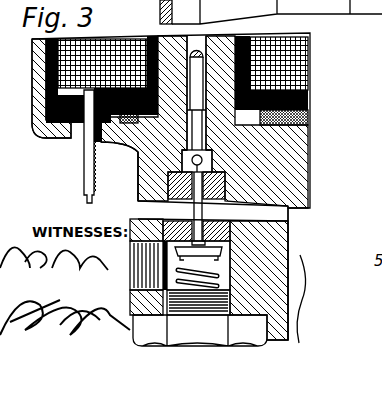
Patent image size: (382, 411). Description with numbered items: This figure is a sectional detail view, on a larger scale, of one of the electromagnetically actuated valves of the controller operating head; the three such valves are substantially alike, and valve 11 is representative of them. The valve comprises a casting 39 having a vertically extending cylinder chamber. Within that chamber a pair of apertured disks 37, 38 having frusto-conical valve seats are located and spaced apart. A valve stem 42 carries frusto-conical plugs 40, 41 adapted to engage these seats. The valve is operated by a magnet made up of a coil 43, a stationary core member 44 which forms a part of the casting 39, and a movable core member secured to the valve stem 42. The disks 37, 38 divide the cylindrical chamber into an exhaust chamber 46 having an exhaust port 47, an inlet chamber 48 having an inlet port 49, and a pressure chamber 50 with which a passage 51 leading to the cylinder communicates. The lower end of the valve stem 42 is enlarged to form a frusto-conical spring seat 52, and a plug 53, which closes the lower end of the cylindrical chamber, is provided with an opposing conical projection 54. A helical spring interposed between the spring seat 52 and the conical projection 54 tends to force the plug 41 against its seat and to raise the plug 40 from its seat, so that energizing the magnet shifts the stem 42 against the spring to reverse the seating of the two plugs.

The electromagnetically actuated valve 11 is at (293, 284).
The apertured disk 37 is at (140, 188).
The apertured disk 38 is at (157, 218).
The casting 39 is at (310, 157).
The frusto-conical plug 40 is at (212, 160).
The frusto-conical plug 41 is at (208, 209).
The valve stem 42 is at (185, 113).
The coil 43 is at (304, 60).
The stationary core member 44 is at (40, 68).
The exhaust chamber 46 is at (205, 140).
The exhaust port 47 is at (183, 154).
The inlet chamber 48 is at (140, 252).
The inlet port 49 is at (136, 276).
The pressure chamber 50 is at (217, 194).
The passage 51 is at (290, 209).
The spring seat 52 is at (227, 249).
The plug 53 is at (213, 300).
The conical projection 54 is at (208, 284).